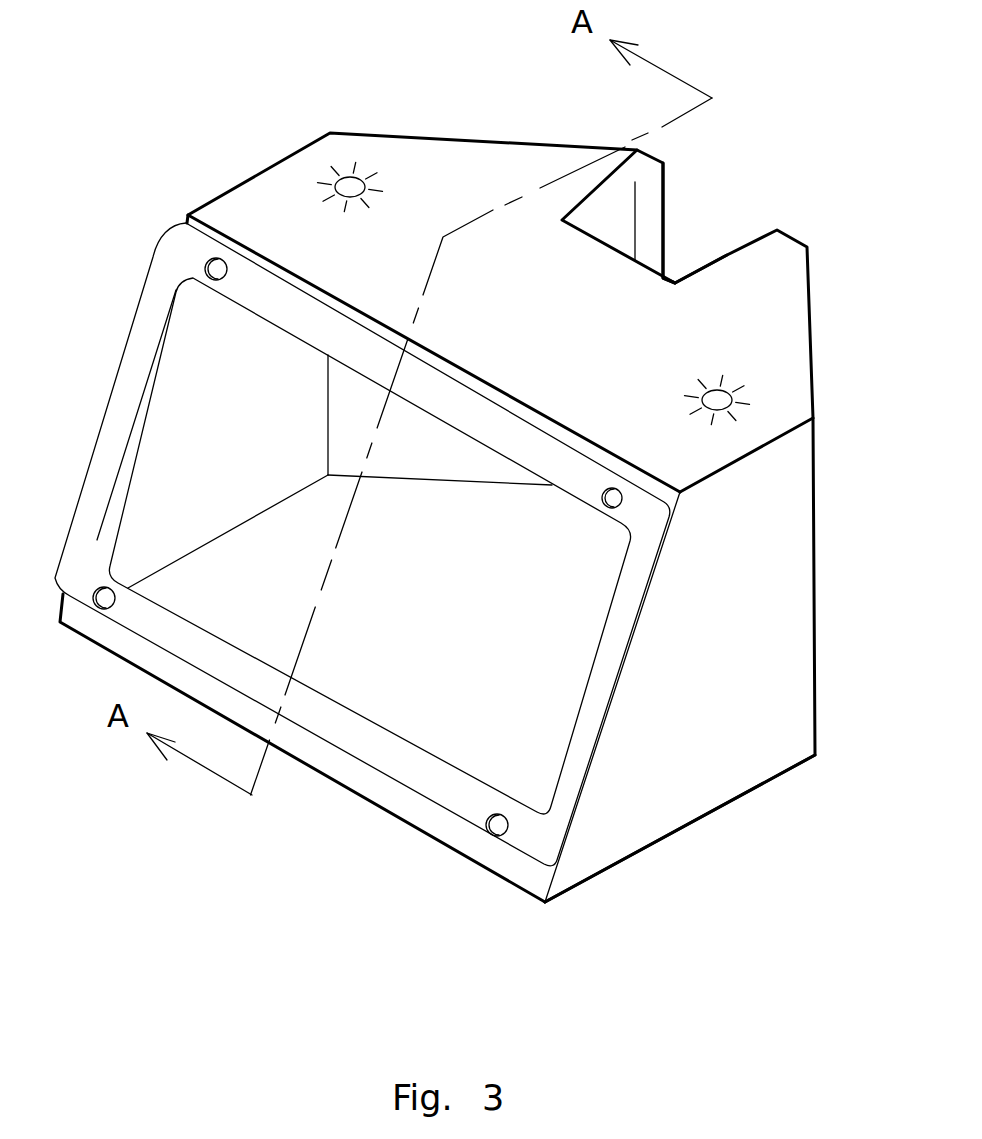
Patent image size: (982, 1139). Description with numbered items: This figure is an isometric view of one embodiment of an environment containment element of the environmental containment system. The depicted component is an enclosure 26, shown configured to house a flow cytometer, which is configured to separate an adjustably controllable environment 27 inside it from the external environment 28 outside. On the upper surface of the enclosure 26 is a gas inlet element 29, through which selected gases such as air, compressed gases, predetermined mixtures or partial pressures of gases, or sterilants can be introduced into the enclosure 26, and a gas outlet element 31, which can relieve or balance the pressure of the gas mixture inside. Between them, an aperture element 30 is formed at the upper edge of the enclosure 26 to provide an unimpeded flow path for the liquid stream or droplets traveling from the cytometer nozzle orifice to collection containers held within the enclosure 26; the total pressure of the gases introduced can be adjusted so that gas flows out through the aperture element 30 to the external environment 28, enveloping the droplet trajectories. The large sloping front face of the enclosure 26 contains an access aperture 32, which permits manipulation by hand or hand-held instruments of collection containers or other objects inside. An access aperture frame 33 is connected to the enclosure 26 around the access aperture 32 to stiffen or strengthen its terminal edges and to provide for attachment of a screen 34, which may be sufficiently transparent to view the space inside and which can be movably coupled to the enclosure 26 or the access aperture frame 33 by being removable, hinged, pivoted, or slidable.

The enclosure 26 is at (697, 745).
The adjustably controllable environment 27 is at (443, 593).
The external environment 28 is at (866, 384).
The gas inlet element 29 is at (373, 182).
The aperture element 30 is at (725, 256).
The gas outlet element 31 is at (714, 382).
The access aperture 32 is at (603, 628).
The access aperture frame 33 is at (598, 688).
The screen 34 is at (508, 712).